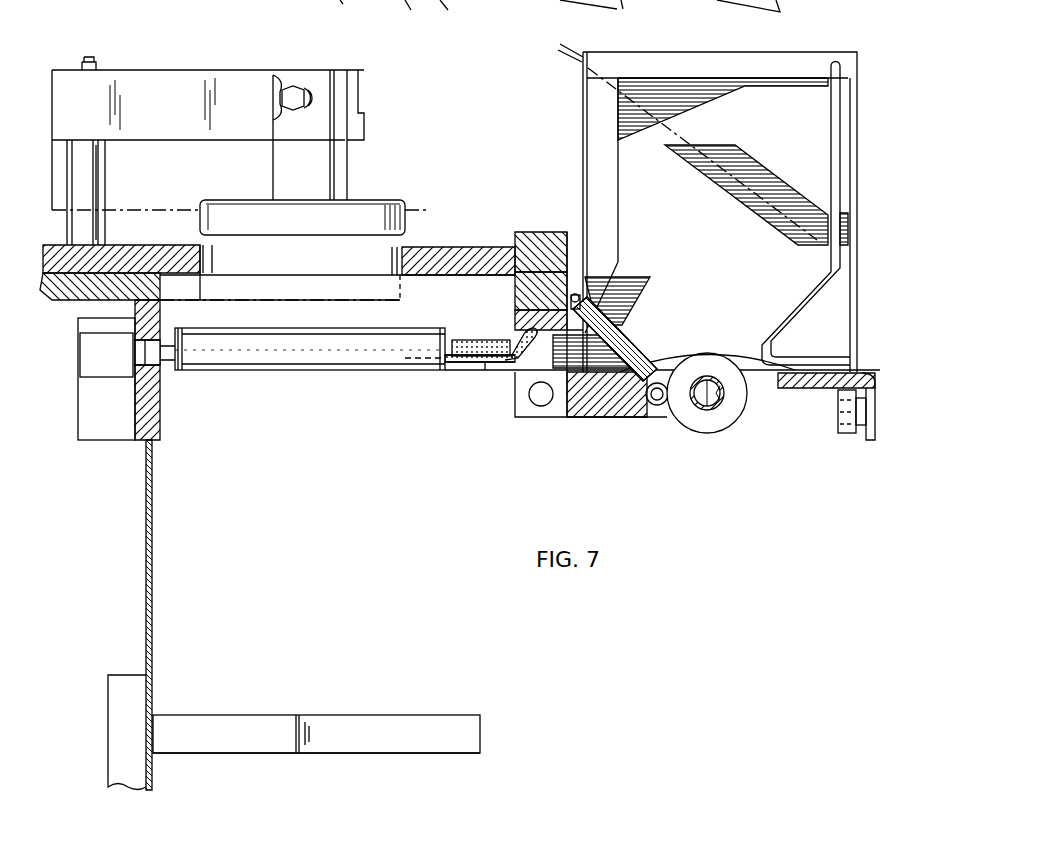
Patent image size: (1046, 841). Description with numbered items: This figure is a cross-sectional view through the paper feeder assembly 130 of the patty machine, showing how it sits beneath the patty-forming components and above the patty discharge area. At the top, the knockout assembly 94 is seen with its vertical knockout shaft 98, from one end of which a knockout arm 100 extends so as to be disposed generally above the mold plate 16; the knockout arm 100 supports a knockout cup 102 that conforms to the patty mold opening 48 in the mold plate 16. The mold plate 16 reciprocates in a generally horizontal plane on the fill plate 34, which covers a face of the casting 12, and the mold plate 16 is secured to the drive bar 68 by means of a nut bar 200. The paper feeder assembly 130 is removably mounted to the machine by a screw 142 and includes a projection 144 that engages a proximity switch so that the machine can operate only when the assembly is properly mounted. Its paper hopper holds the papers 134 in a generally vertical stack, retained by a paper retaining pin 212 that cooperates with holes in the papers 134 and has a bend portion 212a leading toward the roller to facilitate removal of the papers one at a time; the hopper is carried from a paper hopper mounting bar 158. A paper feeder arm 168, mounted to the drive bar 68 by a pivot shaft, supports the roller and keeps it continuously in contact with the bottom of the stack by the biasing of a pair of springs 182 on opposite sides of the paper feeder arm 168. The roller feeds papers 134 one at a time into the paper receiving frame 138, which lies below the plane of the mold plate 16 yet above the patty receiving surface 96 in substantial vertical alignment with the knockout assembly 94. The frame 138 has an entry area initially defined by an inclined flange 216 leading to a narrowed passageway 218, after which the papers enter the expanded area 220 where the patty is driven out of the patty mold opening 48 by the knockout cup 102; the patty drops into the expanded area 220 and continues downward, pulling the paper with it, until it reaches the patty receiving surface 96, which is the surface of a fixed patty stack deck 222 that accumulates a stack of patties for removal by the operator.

The casting 12 is at (150, 418).
The mold plate 16 is at (440, 248).
The fill plate 34 is at (72, 282).
The patty mold opening 48 is at (388, 270).
The drive bar 68 is at (572, 292).
The knockout assembly 94 is at (383, 125).
The patty receiving surface 96 is at (378, 715).
The vertical knockout shaft 98 is at (96, 173).
The knockout arm 100 is at (158, 80).
The knockout cup 102 is at (372, 208).
The paper feeder assembly 130 is at (317, 6).
The papers 134 is at (727, 93).
The paper receiving frame 138 is at (318, 373).
The screw 142 is at (461, 10).
The projection 144 is at (150, 384).
The paper hopper mounting bar 158 is at (845, 438).
The paper feeder arm 168 is at (627, 412).
The springs 182 is at (592, 400).
The nut bar 200 is at (537, 232).
The paper retaining pin 212 is at (805, 62).
The bend portion 212a is at (809, 312).
The inclined flange 216 is at (527, 358).
The narrowed passageway 218 is at (497, 360).
The expanded area 220 is at (244, 348).
The patty stack deck 222 is at (472, 733).